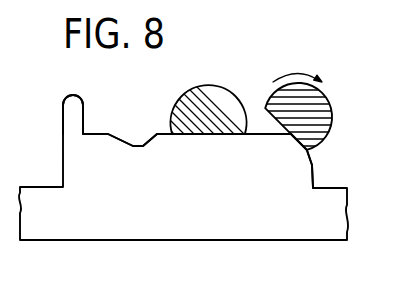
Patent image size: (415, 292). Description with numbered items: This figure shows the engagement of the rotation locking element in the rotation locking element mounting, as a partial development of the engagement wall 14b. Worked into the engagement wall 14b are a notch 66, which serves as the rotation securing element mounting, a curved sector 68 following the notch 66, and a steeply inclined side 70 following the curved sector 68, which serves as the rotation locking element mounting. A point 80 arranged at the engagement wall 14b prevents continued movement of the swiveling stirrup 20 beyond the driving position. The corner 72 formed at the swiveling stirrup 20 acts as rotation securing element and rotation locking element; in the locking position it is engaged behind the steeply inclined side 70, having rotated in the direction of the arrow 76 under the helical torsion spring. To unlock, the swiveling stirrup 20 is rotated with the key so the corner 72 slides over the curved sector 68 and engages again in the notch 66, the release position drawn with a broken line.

The engagement wall 14b is at (192, 224).
The point 80 is at (66, 105).
The notch 66 is at (138, 147).
The curved sector 68 is at (223, 135).
The swiveling stirrup 20 is at (187, 105).
The corner 72 is at (318, 135).
The steeply inclined side 70 is at (308, 160).
The arrow 76 is at (297, 71).